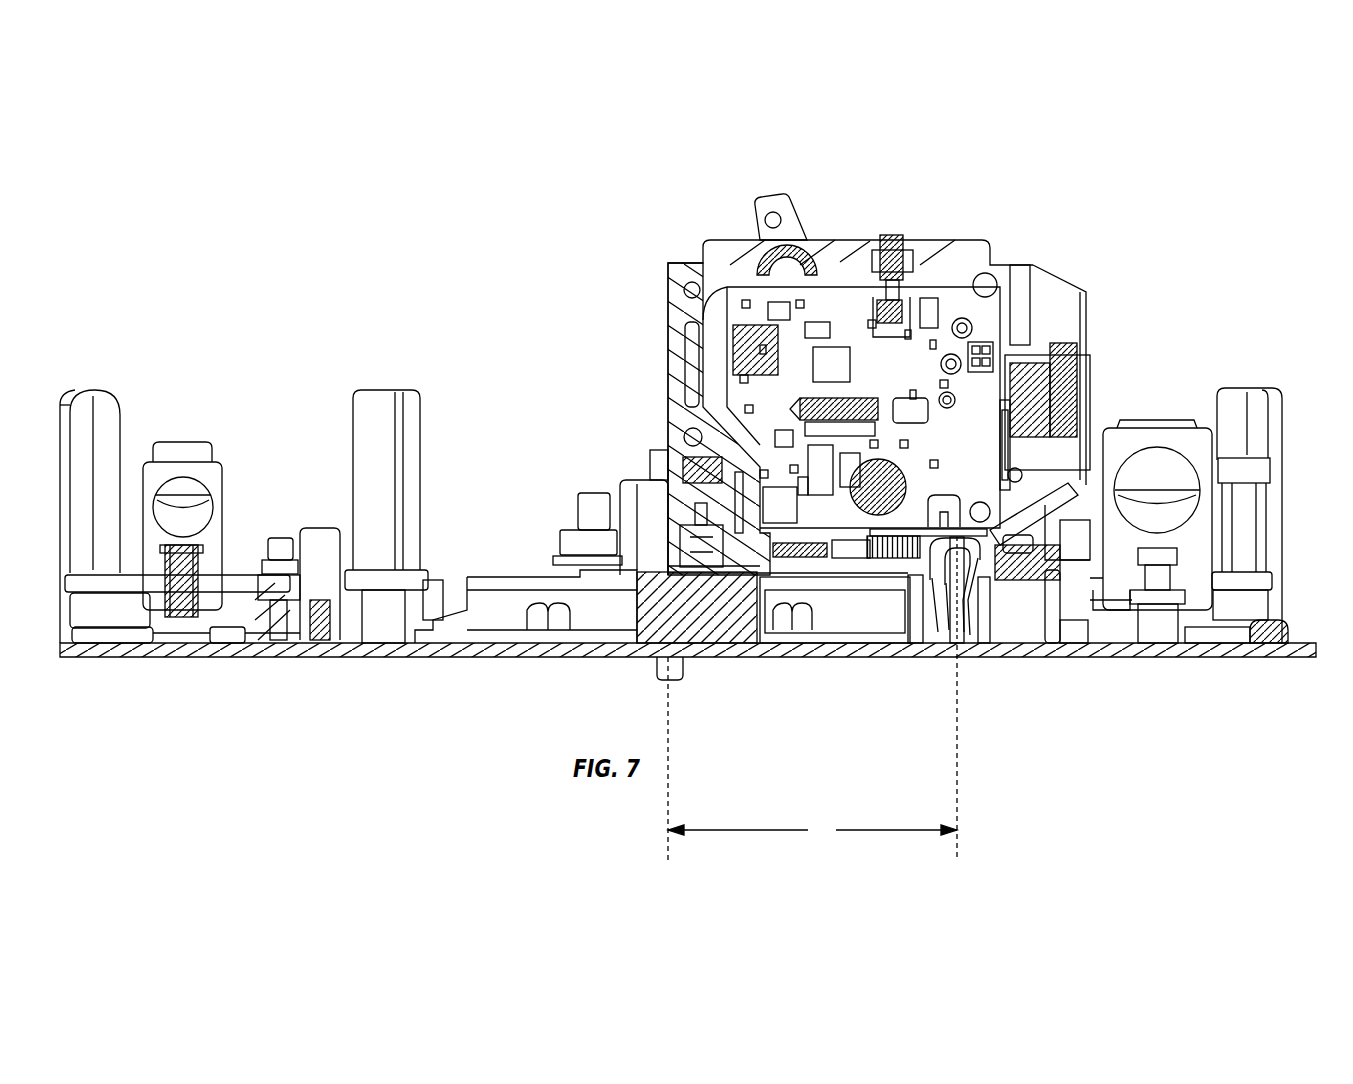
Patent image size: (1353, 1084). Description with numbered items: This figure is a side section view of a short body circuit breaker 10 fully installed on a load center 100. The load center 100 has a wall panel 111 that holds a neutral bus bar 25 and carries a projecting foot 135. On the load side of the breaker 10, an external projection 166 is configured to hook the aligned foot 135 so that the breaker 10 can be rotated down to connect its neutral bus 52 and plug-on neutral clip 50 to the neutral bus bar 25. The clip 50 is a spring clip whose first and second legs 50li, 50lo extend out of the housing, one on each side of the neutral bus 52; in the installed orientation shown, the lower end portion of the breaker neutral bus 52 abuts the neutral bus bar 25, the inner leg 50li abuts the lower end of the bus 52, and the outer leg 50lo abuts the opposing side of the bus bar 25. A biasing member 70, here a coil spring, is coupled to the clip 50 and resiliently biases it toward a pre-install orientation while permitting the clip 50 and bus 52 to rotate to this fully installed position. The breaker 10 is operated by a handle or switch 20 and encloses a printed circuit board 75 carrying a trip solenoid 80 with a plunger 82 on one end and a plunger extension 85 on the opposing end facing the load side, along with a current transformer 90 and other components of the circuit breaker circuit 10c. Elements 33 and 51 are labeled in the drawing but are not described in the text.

The load center 100 is at (518, 392).
The circuit breaker 10 is at (672, 283).
The circuit breaker circuit 10c is at (985, 335).
The handle or switch 20 is at (786, 210).
The neutral bus bar 25 is at (965, 600).
The terminal block 33 is at (1030, 558).
The plug-on neutral clip 50 is at (895, 600).
The inner clip leg 50li is at (940, 585).
The outer clip leg 50lo is at (985, 610).
The spring arm 51 is at (1010, 600).
The neutral bus 52 is at (958, 600).
The biasing member 70 is at (885, 560).
The printed circuit board 75 is at (955, 310).
The trip solenoid 80 is at (705, 330).
The plunger 82 is at (712, 425).
The plunger extension 85 is at (880, 395).
The current transformer 90 is at (978, 422).
The wall panel 111 is at (490, 657).
The projecting foot 135 is at (1040, 522).
The external projection 166 is at (1020, 580).